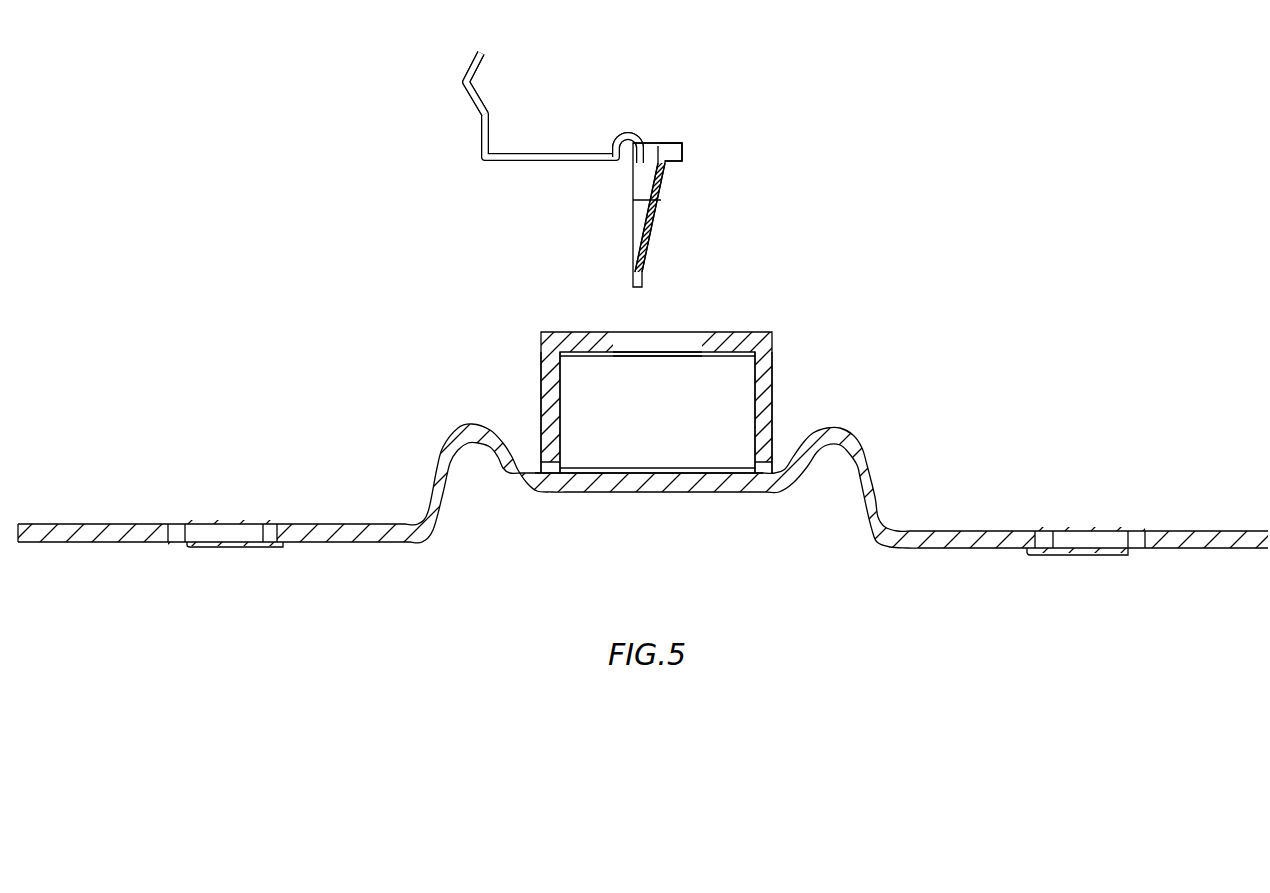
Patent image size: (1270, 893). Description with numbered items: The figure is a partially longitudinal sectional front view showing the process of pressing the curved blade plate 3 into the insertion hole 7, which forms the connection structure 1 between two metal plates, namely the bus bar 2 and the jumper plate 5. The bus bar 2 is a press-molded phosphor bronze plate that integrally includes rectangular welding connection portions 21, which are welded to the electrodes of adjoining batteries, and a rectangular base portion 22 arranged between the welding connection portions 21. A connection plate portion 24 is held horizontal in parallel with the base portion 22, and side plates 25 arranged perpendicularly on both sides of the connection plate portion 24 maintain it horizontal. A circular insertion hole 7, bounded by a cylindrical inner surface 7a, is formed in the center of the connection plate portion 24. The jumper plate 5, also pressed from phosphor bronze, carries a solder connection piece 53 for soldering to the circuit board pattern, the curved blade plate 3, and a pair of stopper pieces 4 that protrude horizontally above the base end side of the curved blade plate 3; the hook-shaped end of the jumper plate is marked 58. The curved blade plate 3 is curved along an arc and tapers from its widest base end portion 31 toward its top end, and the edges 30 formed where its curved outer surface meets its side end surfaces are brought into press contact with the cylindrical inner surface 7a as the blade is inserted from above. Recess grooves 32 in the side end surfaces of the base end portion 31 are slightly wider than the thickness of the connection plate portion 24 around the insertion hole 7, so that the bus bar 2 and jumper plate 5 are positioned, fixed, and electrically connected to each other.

The connection structure 1 is at (895, 123).
The bus bar 2 is at (273, 443).
The welding connection portion 21 is at (113, 533).
The base portion 22 is at (673, 488).
The connection plate portion 24 is at (572, 342).
The side plate 25 is at (760, 403).
The curved blade plate 3 is at (646, 216).
The edge 30 is at (648, 240).
The base end portion 31 is at (648, 183).
The recess groove 32 is at (678, 175).
The stopper piece 4 is at (680, 150).
The jumper plate 5 is at (455, 148).
The solder connection piece 53 is at (488, 112).
The bracket hook 58 is at (620, 136).
The insertion hole 7 is at (687, 342).
The cylindrical inner surface 7a is at (613, 343).